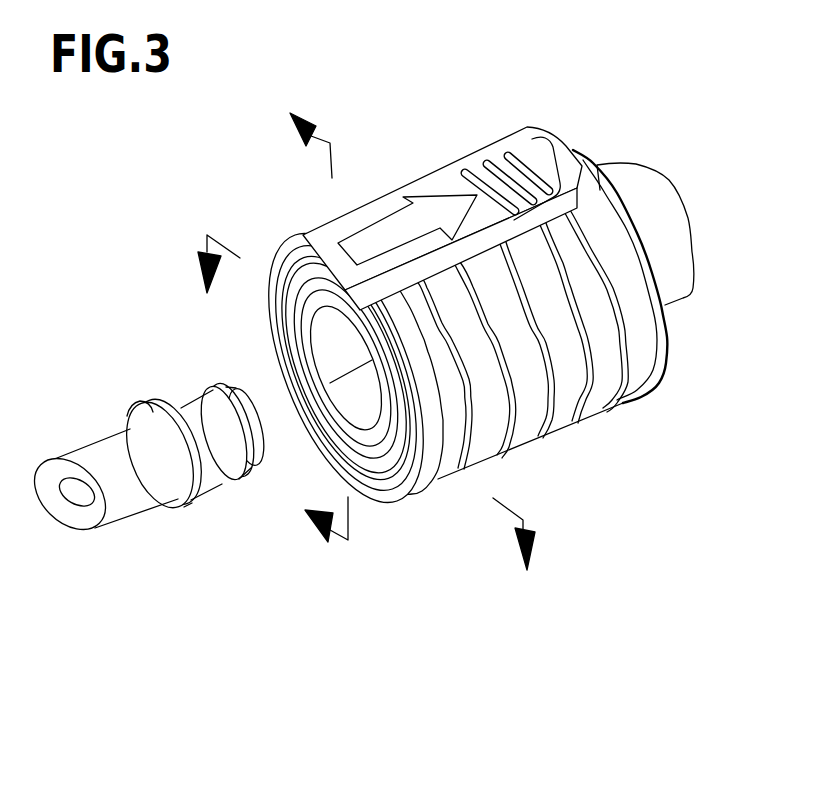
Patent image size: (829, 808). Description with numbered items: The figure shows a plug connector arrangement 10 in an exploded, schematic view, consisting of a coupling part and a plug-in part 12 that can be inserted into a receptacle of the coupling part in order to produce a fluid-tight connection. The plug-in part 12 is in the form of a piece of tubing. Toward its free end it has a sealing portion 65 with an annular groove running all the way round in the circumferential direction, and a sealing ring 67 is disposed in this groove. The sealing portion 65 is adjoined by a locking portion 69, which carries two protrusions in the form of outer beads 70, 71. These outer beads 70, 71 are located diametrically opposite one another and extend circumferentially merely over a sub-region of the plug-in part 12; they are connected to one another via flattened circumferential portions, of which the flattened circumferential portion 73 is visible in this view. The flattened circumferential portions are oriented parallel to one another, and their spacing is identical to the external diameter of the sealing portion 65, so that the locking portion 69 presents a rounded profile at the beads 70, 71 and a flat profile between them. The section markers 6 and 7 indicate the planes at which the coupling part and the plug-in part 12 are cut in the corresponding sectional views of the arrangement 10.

The section line 6- 6 is at (326, 344).
The section line 7- 7 is at (371, 380).
The plug connector arrangement 10 is at (290, 598).
The plug-in part 12 is at (144, 472).
The sealing portion 65 is at (172, 372).
The sealing ring 67 is at (240, 458).
The locking portion 69 is at (113, 373).
The outer bead 70 is at (127, 413).
The outer bead 71 is at (186, 506).
The flattened circumferential portion 73 is at (130, 428).